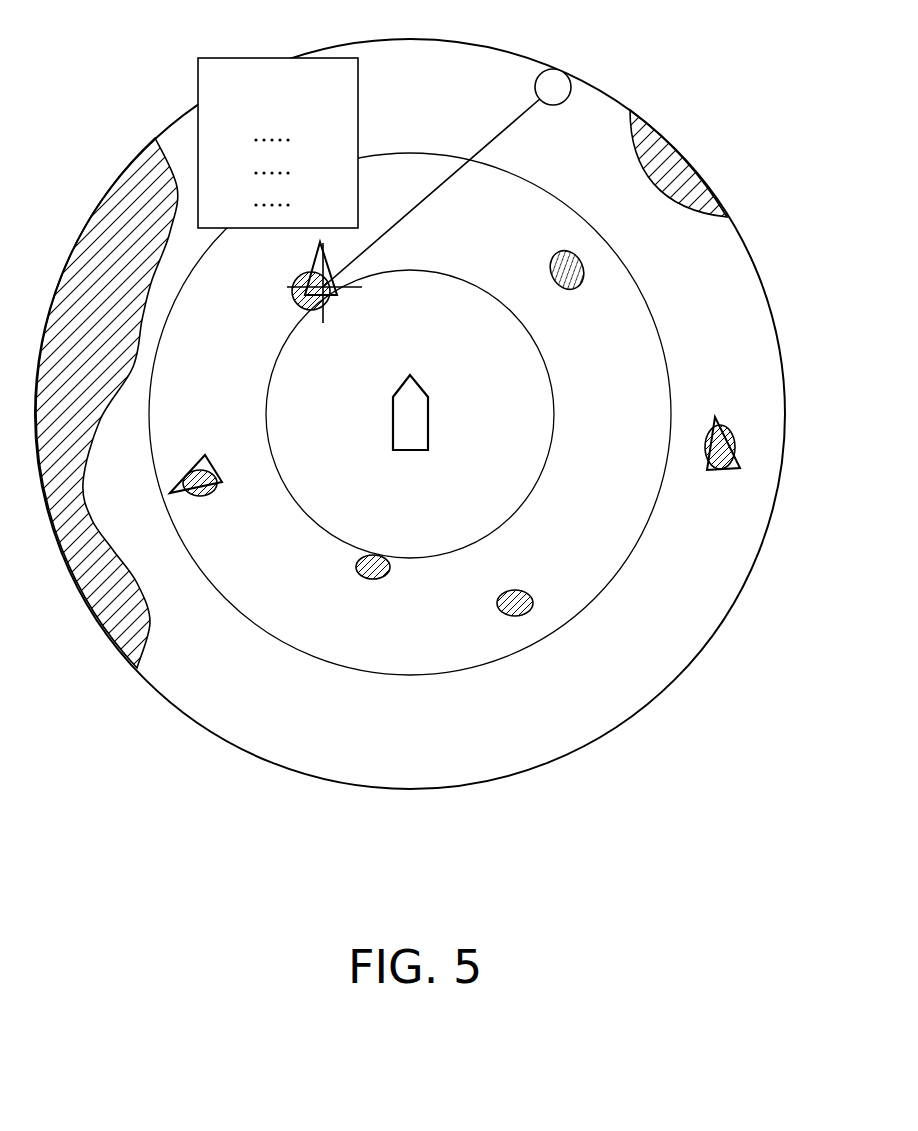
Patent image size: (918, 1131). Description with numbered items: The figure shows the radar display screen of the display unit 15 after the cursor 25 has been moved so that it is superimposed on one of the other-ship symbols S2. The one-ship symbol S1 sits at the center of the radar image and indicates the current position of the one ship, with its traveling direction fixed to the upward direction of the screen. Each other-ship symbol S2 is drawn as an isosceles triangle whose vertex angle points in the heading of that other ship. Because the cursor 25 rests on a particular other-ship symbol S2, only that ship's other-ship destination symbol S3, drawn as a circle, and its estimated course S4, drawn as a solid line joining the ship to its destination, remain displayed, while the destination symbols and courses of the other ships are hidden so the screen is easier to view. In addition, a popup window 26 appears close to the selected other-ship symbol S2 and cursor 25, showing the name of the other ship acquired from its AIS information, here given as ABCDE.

The display unit 15 is at (215, 795).
The cursor 25 is at (330, 300).
The popup window 26 is at (358, 138).
The one-ship symbol S1 is at (400, 450).
The other-ship symbol S2 is at (300, 283).
The other-ship destination symbol S3 is at (570, 95).
The estimated course S4 is at (427, 193).